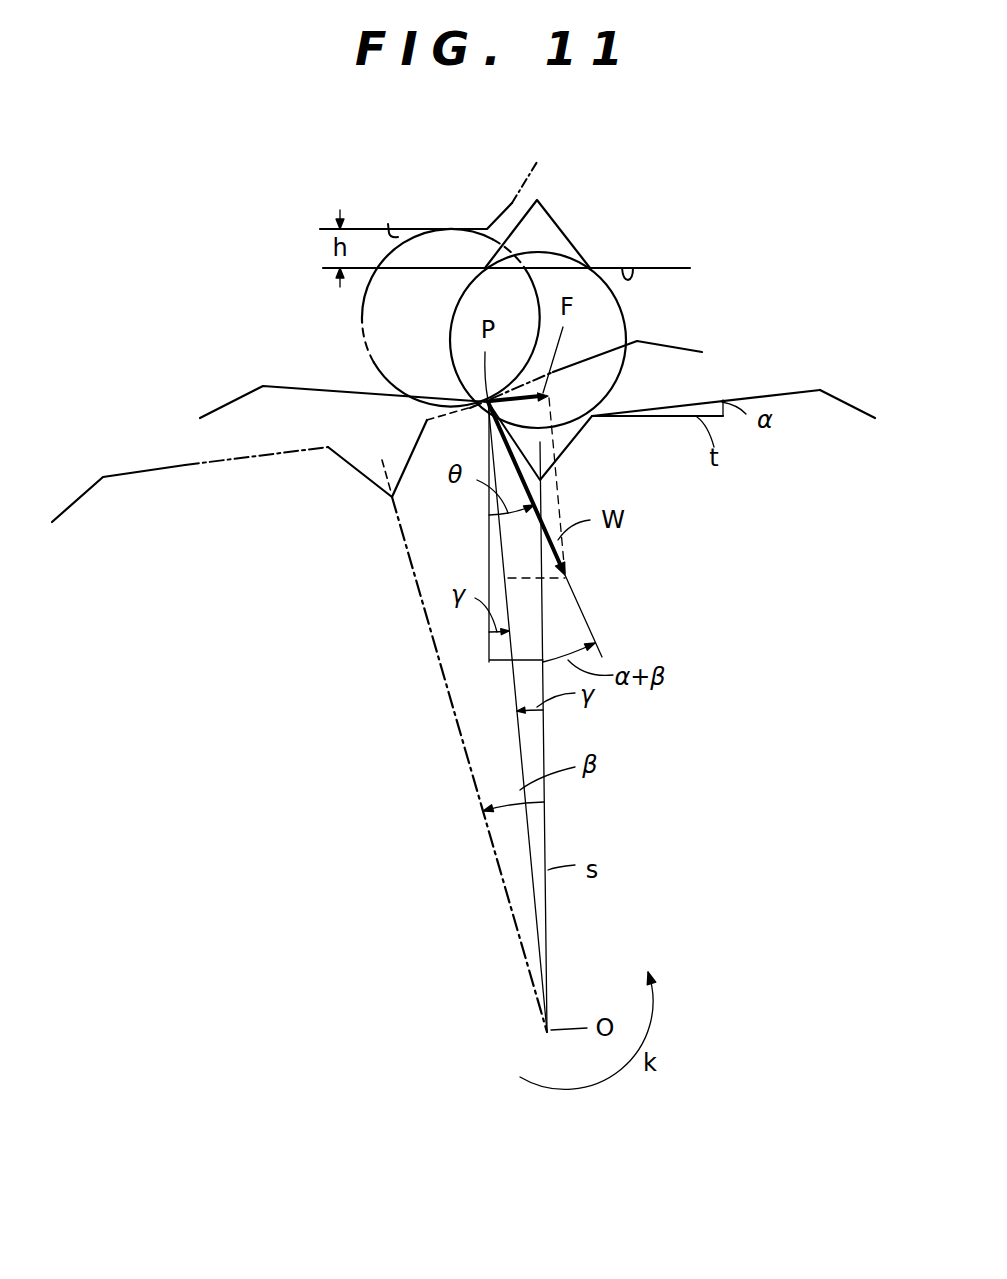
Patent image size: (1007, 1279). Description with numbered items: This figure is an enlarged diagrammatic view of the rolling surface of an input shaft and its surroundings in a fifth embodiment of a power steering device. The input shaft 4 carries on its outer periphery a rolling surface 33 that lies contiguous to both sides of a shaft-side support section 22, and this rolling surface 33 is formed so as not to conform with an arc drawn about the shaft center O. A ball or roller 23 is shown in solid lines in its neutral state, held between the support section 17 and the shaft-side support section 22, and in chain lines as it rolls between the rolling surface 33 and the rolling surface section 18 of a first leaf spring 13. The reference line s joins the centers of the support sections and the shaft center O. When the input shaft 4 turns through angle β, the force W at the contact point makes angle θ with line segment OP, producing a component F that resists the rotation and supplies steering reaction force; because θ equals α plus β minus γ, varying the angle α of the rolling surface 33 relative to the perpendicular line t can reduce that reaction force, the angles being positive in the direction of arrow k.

The input shaft 4 is at (850, 413).
The first leaf spring 13 is at (497, 196).
The support section 17 is at (558, 227).
The rolling surface section 18 is at (390, 220).
The shaft-side support section 22 is at (578, 432).
The ball or roller 23 is at (373, 321).
The rolling surface 33 is at (622, 372).